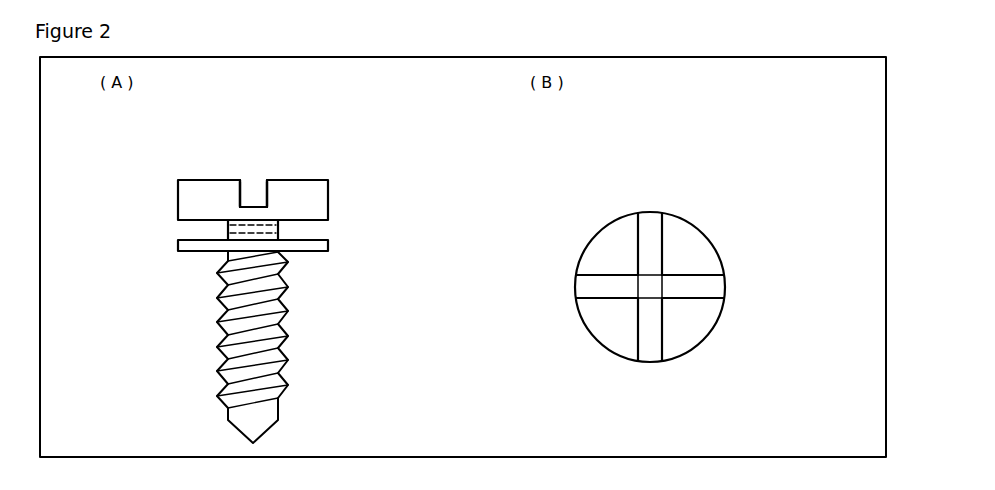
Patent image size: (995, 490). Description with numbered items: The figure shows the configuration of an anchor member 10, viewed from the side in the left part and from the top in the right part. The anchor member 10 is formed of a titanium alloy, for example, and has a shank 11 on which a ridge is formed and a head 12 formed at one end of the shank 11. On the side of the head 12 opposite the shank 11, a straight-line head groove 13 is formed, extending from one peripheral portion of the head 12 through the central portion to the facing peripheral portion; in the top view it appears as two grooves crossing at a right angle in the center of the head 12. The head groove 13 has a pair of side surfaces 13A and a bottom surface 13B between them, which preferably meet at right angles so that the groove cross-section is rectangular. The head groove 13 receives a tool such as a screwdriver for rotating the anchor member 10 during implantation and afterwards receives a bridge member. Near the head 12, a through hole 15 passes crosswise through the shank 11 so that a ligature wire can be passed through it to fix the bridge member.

The anchor member 10 is at (477, 266).
The shank 11 is at (282, 336).
The head 12 is at (298, 209).
The head groove 13 is at (258, 181).
The side surface 13A is at (240, 193).
The bottom surface 13B is at (248, 198).
The through hole 15 is at (285, 232).